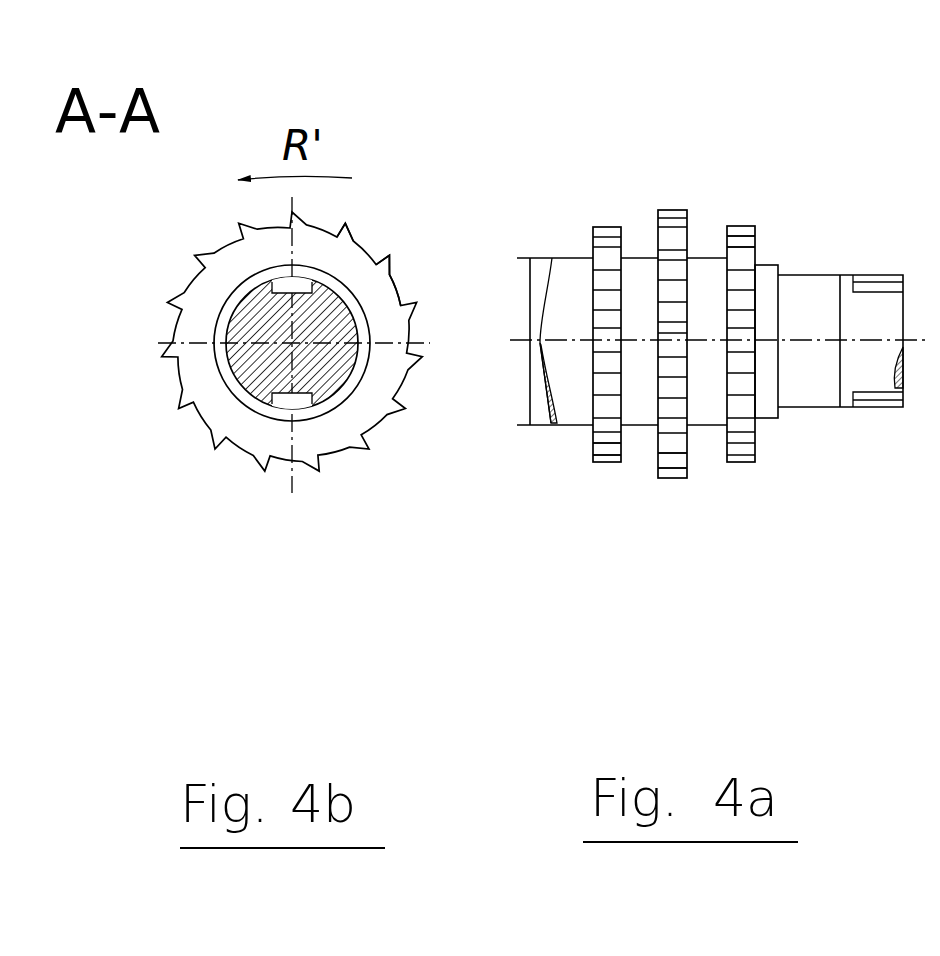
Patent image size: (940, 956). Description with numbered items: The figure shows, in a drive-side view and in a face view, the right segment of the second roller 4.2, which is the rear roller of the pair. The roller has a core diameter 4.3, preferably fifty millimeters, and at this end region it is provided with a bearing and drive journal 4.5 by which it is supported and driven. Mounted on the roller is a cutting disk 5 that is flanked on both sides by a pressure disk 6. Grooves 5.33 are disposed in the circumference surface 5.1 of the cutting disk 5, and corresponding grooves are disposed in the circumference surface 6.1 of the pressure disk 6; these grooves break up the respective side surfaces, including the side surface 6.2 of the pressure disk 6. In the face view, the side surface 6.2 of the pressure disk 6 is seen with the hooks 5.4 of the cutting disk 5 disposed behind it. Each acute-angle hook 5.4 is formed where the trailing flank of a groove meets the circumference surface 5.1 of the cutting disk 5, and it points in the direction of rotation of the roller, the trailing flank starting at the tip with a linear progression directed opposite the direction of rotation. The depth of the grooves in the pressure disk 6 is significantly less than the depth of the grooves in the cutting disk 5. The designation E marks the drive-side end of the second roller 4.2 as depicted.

In FIG. 4a, the drive unit E is at (639, 256).
In FIG. 4a, the second roller 4.2 is at (638, 507).
In FIG. 4a, the core diameter 4.3 is at (527, 387).
In FIG. 4b, the bearing and drive journal 4.5 is at (240, 392).
In FIG. 4a, the bearing and drive journal 4.5 is at (825, 408).
In FIG. 4a, the cutting disk 5 is at (673, 202).
In FIG. 4a, the circumference surface 5.1 is at (673, 480).
In FIG. 4b, the grooves 5.33 is at (408, 285).
In FIG. 4b, the acute-angle hook 5.4 is at (357, 231).
In FIG. 4a, the pressure disk 6 is at (602, 212).
In FIG. 4a, the circumference surface 6.1 is at (606, 466).
In FIG. 4a, the side surface 6.2 is at (760, 240).